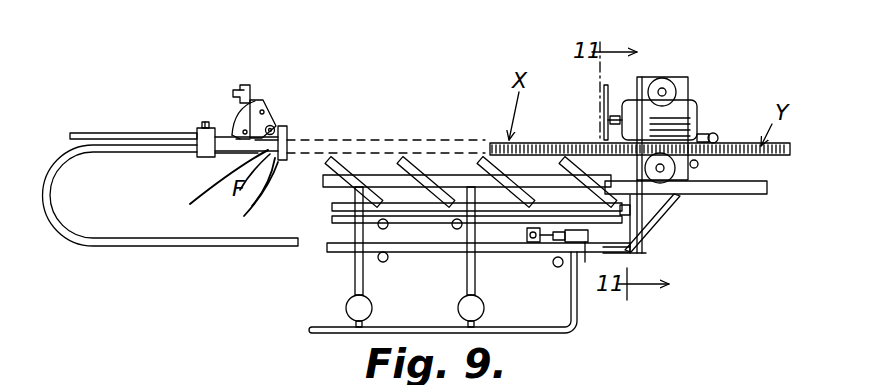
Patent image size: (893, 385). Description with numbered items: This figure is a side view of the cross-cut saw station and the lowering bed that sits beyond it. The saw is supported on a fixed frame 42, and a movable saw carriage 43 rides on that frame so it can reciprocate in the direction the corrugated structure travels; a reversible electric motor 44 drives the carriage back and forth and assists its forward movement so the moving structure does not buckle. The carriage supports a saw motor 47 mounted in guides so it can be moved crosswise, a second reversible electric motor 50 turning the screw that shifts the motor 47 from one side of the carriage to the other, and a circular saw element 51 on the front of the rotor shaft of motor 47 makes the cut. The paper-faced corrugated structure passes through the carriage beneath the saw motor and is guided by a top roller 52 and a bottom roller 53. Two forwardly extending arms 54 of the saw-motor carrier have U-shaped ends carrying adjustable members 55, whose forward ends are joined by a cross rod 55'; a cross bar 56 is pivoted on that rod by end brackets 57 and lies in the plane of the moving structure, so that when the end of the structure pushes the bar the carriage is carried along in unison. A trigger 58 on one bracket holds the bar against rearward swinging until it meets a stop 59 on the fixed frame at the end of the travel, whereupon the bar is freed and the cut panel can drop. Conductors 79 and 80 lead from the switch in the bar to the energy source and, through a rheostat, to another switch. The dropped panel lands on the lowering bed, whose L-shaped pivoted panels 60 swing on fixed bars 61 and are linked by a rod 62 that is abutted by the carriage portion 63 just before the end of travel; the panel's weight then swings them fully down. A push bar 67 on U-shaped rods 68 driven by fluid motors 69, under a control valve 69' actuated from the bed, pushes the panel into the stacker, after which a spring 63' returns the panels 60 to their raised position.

The fixed frame 42 is at (748, 193).
The saw carriage 43 is at (690, 90).
The electric motor 44 is at (661, 171).
The motor 47 is at (698, 113).
The electric motor 50 is at (658, 80).
The circular saw element 51 is at (603, 103).
The top roller 52 is at (715, 137).
The bottom roller 53 is at (697, 165).
The forwardly extending arm 54 is at (447, 249).
The adjustable member 55 is at (142, 120).
The cross rod 55' is at (233, 166).
The cross bar 56 is at (274, 166).
The bracket 57 is at (276, 124).
The trigger 58 is at (262, 100).
The stop 59 is at (238, 86).
The pivoted panel 60 is at (342, 163).
The fixed bar 61 is at (446, 224).
The rod 62 is at (462, 202).
The carriage portion 63 is at (658, 241).
The spring 63' is at (584, 186).
The push bar 67 is at (386, 175).
The U-shaped rod 68 is at (476, 278).
The fluid motor 69 is at (390, 311).
The control valve 69' is at (573, 255).
The conductor 79 is at (203, 193).
The conductor 80 is at (250, 208).